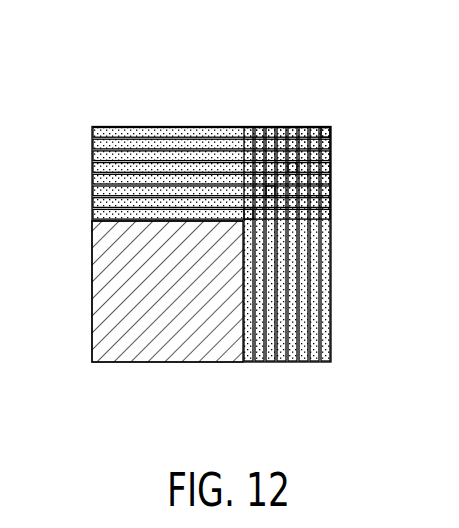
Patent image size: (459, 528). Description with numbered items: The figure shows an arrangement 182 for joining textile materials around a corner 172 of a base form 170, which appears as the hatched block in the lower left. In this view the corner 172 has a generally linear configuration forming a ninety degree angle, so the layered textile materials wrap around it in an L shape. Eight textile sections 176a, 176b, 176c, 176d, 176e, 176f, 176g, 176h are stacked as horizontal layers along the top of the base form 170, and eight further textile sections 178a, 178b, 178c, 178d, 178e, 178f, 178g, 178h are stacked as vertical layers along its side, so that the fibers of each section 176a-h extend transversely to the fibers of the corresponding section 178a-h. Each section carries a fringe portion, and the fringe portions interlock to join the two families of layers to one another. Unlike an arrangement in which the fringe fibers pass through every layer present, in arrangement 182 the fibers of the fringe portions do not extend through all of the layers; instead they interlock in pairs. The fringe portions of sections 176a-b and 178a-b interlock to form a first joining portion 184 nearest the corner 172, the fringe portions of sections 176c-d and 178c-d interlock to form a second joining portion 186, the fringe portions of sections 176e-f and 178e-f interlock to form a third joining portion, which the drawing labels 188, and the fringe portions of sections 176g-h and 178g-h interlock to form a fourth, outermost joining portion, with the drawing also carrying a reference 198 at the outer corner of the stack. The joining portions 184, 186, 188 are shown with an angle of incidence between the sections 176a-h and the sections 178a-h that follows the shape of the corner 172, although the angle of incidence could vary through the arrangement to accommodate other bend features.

The arrangement 182 is at (90, 86).
The base form 170 is at (94, 340).
The corner 172 is at (236, 226).
The textile section 176a is at (93, 216).
The textile section 176b is at (93, 203).
The textile section 176c is at (93, 191).
The textile section 176d is at (93, 179).
The textile section 176e is at (93, 168).
The textile section 176f is at (93, 156).
The textile section 176g is at (93, 144).
The textile section 176h is at (93, 132).
The textile section 178a is at (248, 363).
The textile section 178b is at (259, 363).
The textile section 178c is at (270, 363).
The textile section 178d is at (281, 363).
The textile section 178e is at (292, 363).
The textile section 178f is at (303, 363).
The textile section 178g is at (314, 363).
The textile section 178h is at (325, 363).
The first joining portion 184 is at (255, 209).
The second joining portion 186 is at (277, 186).
The outer intermediate corner 188 is at (298, 161).
The outer corner 198 is at (330, 128).